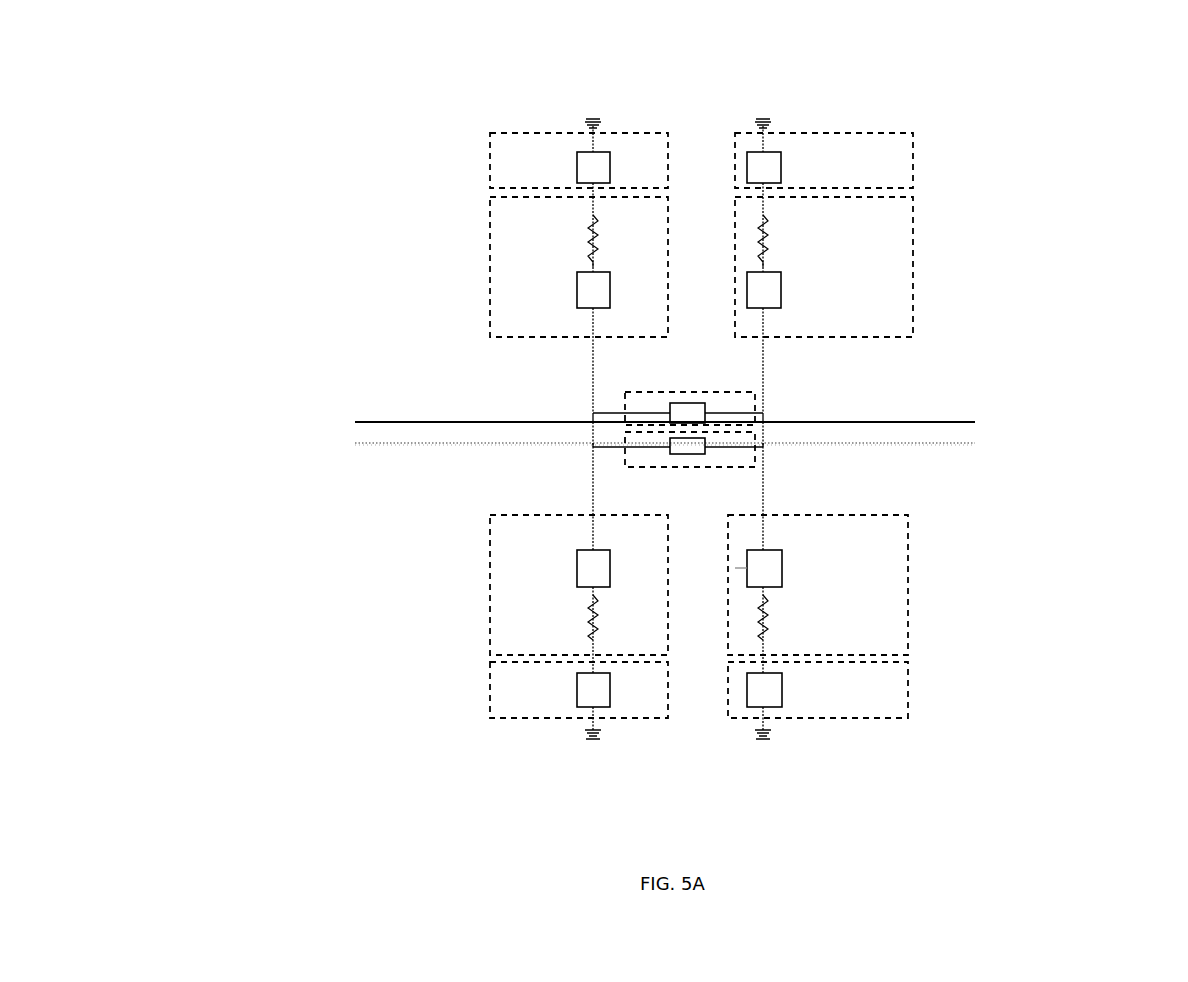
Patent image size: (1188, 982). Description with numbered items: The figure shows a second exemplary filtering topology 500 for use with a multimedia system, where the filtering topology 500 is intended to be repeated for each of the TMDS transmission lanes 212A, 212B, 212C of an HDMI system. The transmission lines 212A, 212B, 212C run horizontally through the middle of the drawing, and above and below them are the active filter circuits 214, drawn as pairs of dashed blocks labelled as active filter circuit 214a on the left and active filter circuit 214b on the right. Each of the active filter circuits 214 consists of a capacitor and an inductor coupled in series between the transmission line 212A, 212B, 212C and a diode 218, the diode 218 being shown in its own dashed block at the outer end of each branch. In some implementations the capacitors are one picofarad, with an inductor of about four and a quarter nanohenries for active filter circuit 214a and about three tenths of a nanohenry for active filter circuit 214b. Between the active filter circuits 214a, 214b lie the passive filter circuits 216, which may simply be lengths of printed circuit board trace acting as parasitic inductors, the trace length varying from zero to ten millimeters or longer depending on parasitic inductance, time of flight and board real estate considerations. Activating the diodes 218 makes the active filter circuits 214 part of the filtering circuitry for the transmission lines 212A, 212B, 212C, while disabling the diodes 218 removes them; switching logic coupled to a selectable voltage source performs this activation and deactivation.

The filtering topology 500 is at (985, 87).
The TMDS transmission lane 212A is at (1043, 460).
The TMDS transmission lane 212B is at (757, 429).
The TMDS transmission lane 212C is at (754, 453).
The active filter circuits 214 is at (232, 83).
The active filter circuit 214a is at (490, 237).
The active filter circuit 214b is at (913, 256).
The passive filter circuits 216 is at (755, 400).
The diode 218 is at (490, 152).